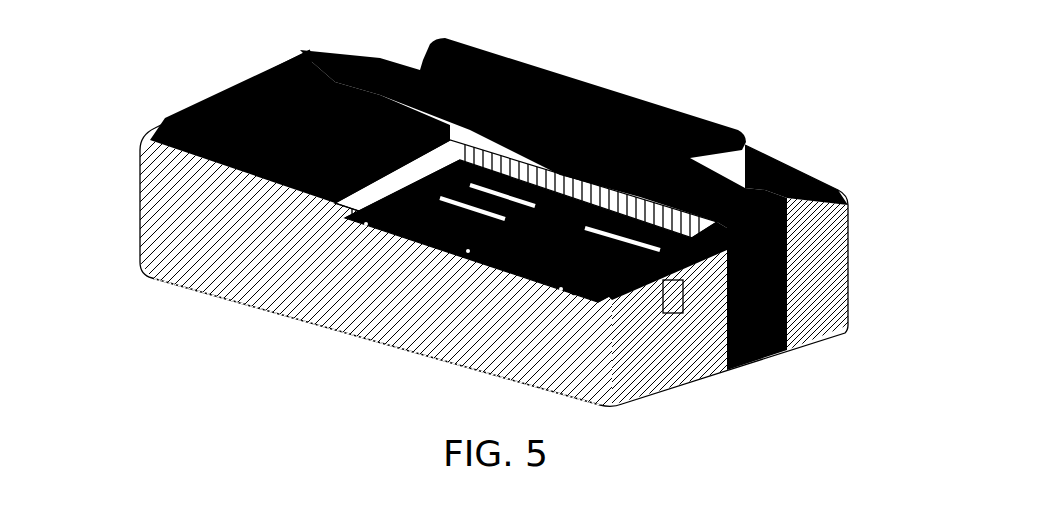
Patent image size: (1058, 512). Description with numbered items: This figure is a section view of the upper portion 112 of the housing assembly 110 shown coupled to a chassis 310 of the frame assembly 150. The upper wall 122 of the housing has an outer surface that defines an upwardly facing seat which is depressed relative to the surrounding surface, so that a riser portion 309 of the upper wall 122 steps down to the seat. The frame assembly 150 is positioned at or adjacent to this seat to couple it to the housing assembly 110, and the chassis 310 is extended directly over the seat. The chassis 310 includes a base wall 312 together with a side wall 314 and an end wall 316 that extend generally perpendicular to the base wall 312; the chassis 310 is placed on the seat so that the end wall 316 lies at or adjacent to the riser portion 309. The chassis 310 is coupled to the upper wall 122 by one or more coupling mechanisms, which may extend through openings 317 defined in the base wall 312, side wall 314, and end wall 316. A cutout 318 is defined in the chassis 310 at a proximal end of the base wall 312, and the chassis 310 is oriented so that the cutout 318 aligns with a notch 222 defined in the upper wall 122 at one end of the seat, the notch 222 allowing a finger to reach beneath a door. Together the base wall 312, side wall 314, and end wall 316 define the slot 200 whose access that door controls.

The housing assembly 110 is at (110, 125).
The upper portion 112 is at (906, 256).
The upper wall 122 is at (241, 98).
The frame assembly 150 is at (579, 305).
The slot 200 is at (568, 233).
The notch 222 is at (690, 327).
The riser portion 309 is at (358, 180).
The chassis 310 is at (519, 268).
The base wall 312 is at (627, 283).
The side wall 314 is at (480, 165).
The end wall 316 is at (393, 177).
The openings 317 is at (450, 172).
The cutout 318 is at (680, 255).